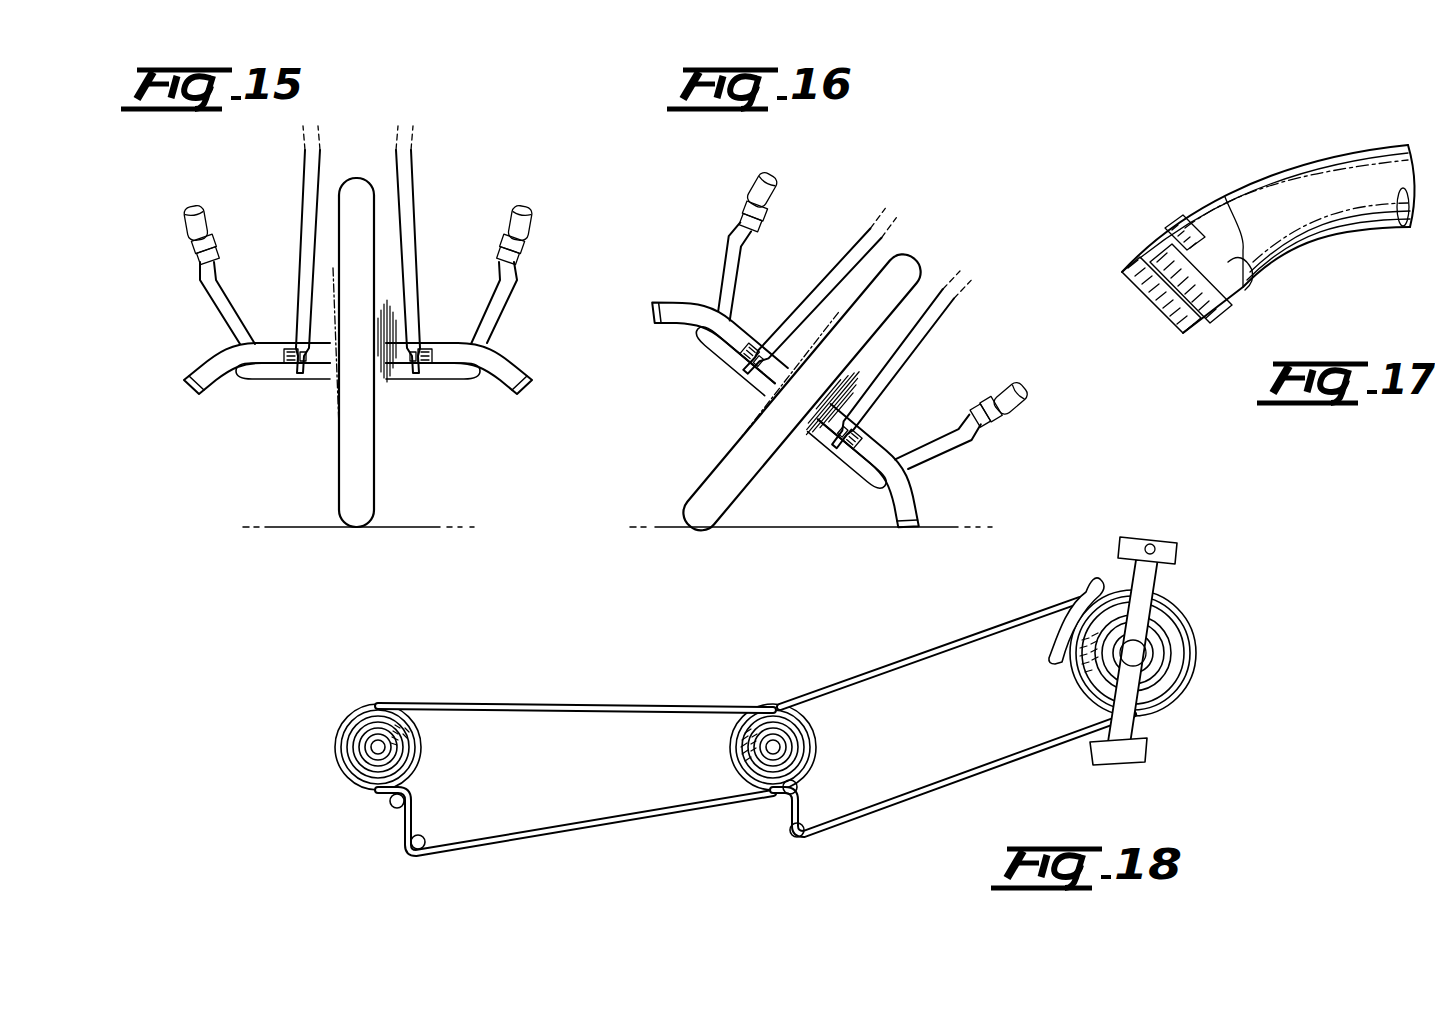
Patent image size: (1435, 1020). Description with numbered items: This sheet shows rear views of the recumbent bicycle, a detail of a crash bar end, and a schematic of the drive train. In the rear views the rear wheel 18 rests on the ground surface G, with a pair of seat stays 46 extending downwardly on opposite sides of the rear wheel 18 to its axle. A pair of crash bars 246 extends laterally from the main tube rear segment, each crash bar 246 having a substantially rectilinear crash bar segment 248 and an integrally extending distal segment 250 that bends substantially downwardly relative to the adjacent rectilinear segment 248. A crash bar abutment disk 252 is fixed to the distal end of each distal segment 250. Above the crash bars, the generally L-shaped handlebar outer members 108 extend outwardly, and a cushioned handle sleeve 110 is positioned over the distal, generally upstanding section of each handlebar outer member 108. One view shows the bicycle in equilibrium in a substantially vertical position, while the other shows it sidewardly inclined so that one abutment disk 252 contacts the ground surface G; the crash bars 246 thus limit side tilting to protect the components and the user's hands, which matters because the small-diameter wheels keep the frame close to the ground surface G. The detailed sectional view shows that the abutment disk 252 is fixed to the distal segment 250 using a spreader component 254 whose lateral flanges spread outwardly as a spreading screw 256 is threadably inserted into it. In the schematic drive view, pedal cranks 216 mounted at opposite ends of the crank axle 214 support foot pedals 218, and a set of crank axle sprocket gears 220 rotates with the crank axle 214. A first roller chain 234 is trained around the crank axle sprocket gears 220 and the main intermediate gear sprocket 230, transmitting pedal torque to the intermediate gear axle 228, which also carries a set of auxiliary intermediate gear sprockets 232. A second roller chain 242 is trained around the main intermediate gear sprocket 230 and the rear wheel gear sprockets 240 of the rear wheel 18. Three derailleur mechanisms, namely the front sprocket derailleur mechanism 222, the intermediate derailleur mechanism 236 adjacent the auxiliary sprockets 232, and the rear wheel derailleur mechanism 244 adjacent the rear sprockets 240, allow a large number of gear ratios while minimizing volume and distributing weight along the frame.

In FIG. 15, the rear wheel 18 is at (334, 477).
In FIG. 16, the rear wheel 18 is at (705, 467).
In FIG. 15, the seat stays 46 is at (307, 178).
In FIG. 16, the seat stays 46 is at (878, 243).
In FIG. 15, the handlebar outer members 108 is at (212, 282).
In FIG. 16, the handlebar outer members 108 is at (740, 253).
In FIG. 15, the cushioned handle sleeve 110 is at (191, 222).
In FIG. 16, the cushioned handle sleeve 110 is at (782, 197).
In FIG. 15, the rear wheel gear sprockets 240 is at (391, 388).
In FIG. 16, the rear wheel gear sprockets 240 is at (804, 441).
In FIG. 18, the rear wheel gear sprockets 240 is at (346, 755).
In FIG. 15, the crash bars 246 is at (247, 381).
In FIG. 16, the crash bars 246 is at (708, 338).
In FIG. 15, the crash bar rectilinear segment 248 is at (267, 346).
In FIG. 16, the crash bar rectilinear segment 248 is at (738, 327).
In FIG. 17, the crash bar rectilinear segment 248 is at (1362, 163).
In FIG. 15, the crash bar distal segment 250 is at (212, 360).
In FIG. 16, the crash bar distal segment 250 is at (679, 297).
In FIG. 17, the crash bar distal segment 250 is at (1224, 197).
In FIG. 15, the crash bar abutment disk 252 is at (182, 378).
In FIG. 16, the crash bar abutment disk 252 is at (658, 306).
In FIG. 17, the crash bar abutment disk 252 is at (1122, 282).
In FIG. 17, the spreader component 254 is at (1187, 220).
In FIG. 17, the spreading screw 256 is at (1243, 265).
In FIG. 18, the crank axle 214 is at (1140, 650).
In FIG. 18, the pedal cranks 216 is at (1150, 577).
In FIG. 18, the foot pedals 218 is at (1168, 547).
In FIG. 18, the crank axle sprocket gears 220 is at (1200, 621).
In FIG. 18, the front sprocket derailleur mechanism 222 is at (1085, 590).
In FIG. 18, the intermediate gear axle 228 is at (768, 735).
In FIG. 18, the main intermediate gear sprocket 230 is at (735, 735).
In FIG. 18, the auxiliary intermediate gear sprockets 232 is at (842, 752).
In FIG. 18, the first roller chain 234 is at (937, 653).
In FIG. 18, the intermediate derailleur mechanism 236 is at (779, 814).
In FIG. 18, the second roller chain 242 is at (520, 704).
In FIG. 18, the rear wheel derailleur mechanism 244 is at (394, 828).
In FIG. 15, the ground surface G is at (426, 527).
In FIG. 16, the ground surface G is at (792, 527).